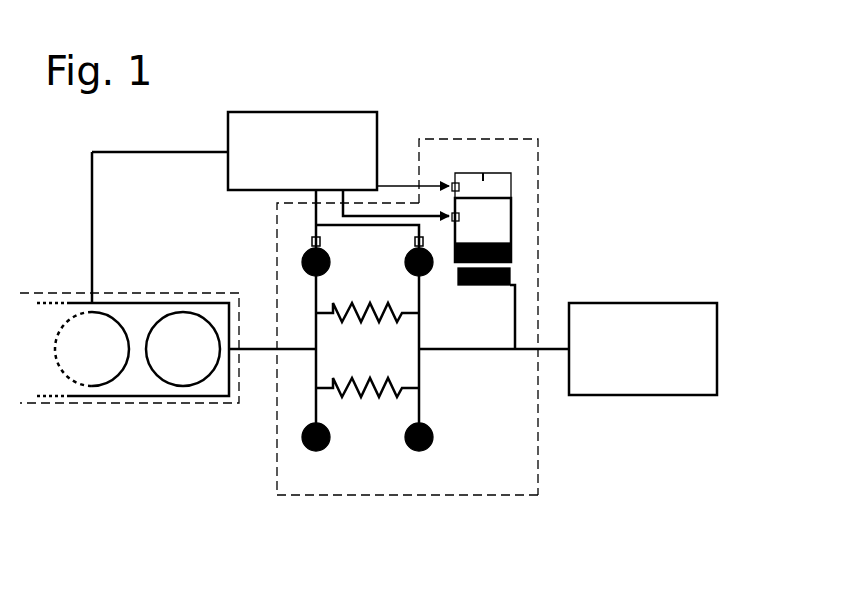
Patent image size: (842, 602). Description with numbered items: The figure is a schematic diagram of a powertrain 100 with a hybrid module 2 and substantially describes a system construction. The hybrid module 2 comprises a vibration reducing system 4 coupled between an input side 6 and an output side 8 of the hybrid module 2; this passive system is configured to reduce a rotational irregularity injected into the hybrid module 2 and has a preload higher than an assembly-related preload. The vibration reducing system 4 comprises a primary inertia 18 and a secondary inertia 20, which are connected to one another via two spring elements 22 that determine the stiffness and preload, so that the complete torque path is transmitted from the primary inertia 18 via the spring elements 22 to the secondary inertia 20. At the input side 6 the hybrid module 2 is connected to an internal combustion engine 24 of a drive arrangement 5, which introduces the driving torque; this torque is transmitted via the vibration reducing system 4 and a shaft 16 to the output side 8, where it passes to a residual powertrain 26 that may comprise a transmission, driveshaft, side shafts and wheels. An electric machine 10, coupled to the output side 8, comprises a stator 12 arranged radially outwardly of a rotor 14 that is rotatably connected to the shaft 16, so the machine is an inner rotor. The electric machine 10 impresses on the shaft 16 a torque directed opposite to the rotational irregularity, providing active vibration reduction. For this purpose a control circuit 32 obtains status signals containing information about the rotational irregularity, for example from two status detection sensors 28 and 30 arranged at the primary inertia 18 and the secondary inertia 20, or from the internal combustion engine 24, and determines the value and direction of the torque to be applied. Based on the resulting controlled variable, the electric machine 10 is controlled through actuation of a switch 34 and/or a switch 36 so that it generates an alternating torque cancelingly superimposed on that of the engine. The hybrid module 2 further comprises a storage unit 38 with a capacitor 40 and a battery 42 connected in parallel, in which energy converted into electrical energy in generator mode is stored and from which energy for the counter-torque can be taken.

The powertrain 100 is at (393, 84).
The hybrid module 2 is at (515, 114).
The vibration reducing system 4 is at (357, 468).
The drive arrangement 5 is at (56, 422).
The input side 6 is at (267, 351).
The output side 8 is at (548, 351).
The electric machine 10 is at (520, 264).
The stator 12 is at (484, 243).
The rotor 14 is at (512, 275).
The shaft 16 is at (493, 351).
The primary inertia 18 is at (313, 452).
The secondary inertia 20 is at (428, 446).
The spring elements 22 is at (388, 318).
The internal combustion engine 24 is at (150, 384).
The residual powertrain 26 is at (700, 318).
The sensor 28 is at (311, 240).
The sensor 30 is at (421, 236).
The control circuit 32 is at (313, 128).
The switch 34 is at (457, 182).
The switch 36 is at (459, 212).
The storage unit 38 is at (492, 188).
The capacitor 40 is at (484, 172).
The battery 42 is at (485, 192).